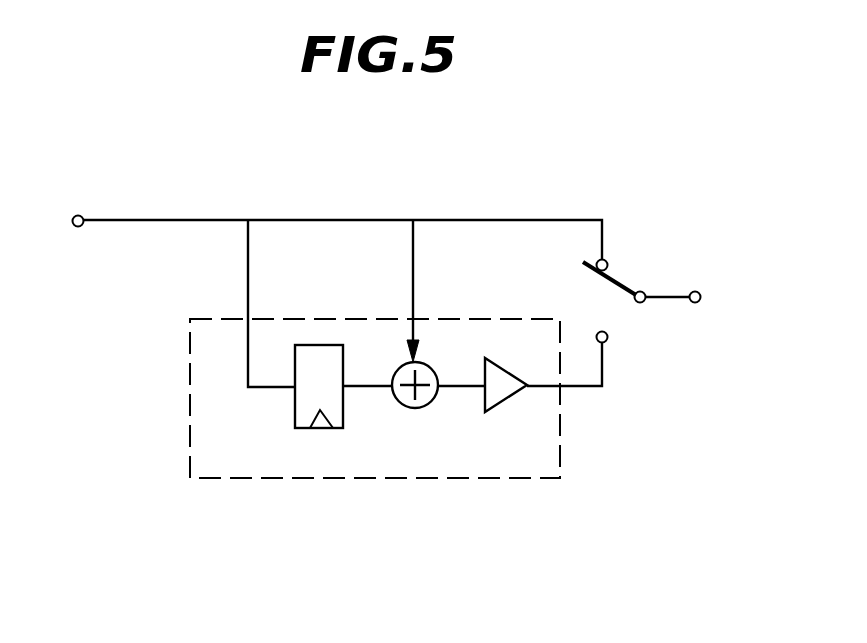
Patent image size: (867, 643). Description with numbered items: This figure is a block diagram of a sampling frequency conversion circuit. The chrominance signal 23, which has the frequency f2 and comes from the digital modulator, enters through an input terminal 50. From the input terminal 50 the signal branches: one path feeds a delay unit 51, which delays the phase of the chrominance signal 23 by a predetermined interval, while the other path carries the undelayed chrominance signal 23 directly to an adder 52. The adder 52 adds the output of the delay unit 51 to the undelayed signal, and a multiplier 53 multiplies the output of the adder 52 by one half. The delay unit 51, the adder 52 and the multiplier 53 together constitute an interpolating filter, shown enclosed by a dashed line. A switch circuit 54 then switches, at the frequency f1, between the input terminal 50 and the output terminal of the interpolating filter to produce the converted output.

The input terminal 50 is at (78, 215).
The chrominance signal 23 is at (118, 229).
The delay unit 51 is at (295, 413).
The adder 52 is at (431, 406).
The multiplier 53 is at (513, 395).
The switch circuit 54 is at (622, 334).